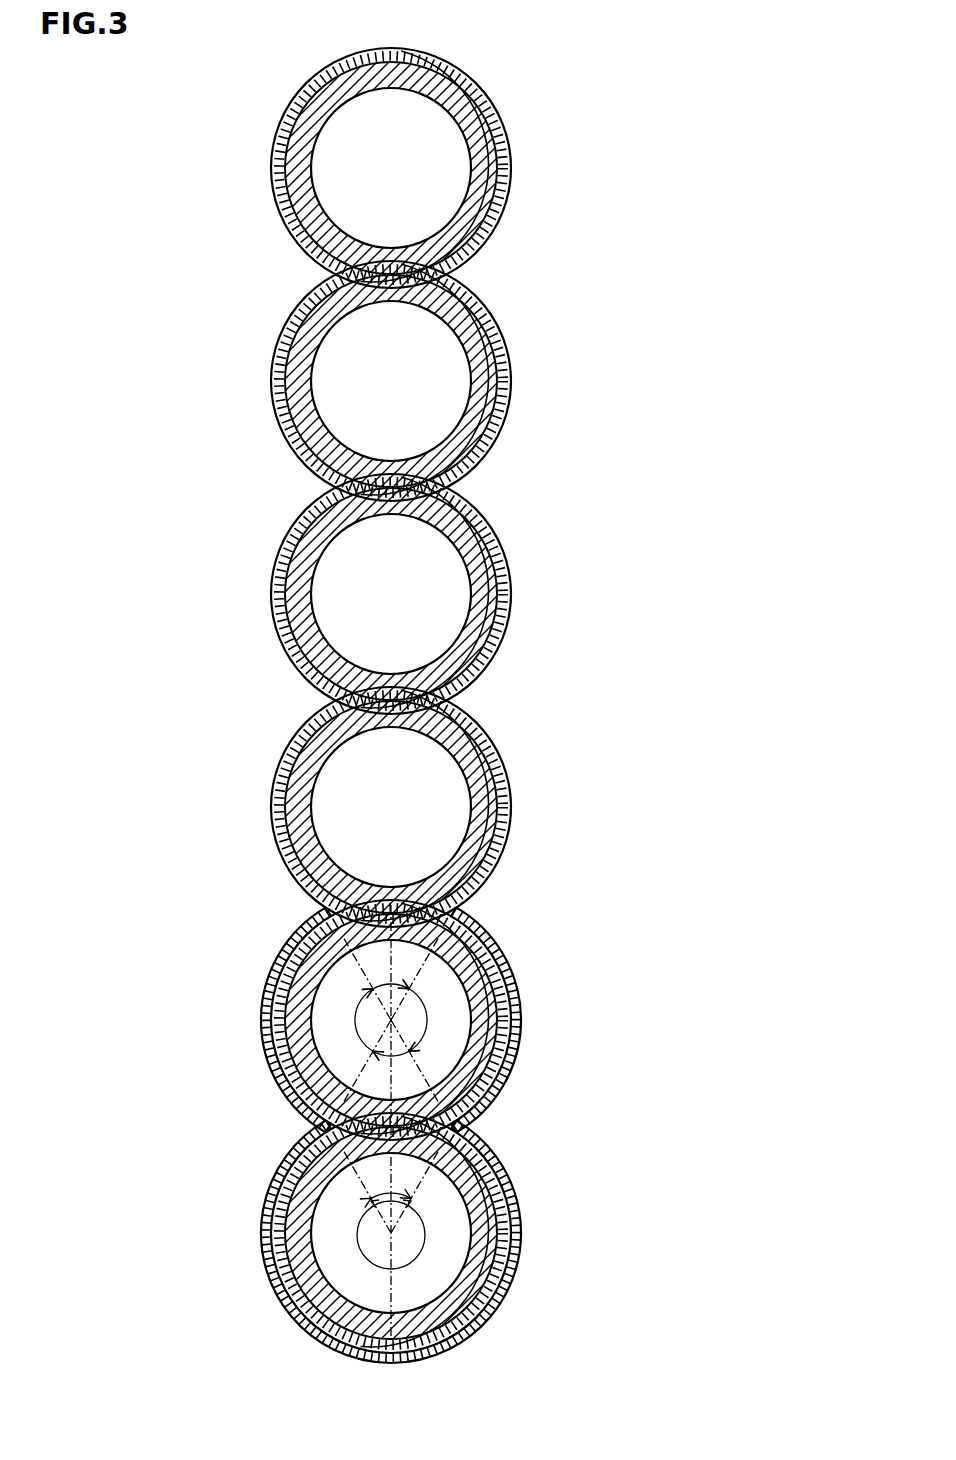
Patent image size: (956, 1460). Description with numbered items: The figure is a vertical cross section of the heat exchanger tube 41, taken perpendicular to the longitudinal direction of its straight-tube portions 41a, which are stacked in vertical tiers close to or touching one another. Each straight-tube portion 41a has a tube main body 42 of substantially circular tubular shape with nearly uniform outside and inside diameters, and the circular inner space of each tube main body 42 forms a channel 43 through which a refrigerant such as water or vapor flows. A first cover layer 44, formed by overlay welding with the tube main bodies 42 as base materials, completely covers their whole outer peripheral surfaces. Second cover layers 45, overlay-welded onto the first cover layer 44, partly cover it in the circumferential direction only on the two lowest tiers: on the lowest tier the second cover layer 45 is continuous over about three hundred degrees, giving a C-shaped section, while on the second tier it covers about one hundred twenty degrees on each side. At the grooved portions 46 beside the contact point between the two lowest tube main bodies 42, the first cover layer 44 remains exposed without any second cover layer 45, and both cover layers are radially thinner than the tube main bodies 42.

The heat exchanger tube 41 is at (677, 108).
The straight-tube portions 41a is at (497, 92).
The tube main bodies 42 is at (497, 142).
The channel 43 is at (442, 168).
The first cover layer 44 is at (505, 208).
The second cover layers 45 is at (275, 990).
The grooved portions 46 is at (320, 916).